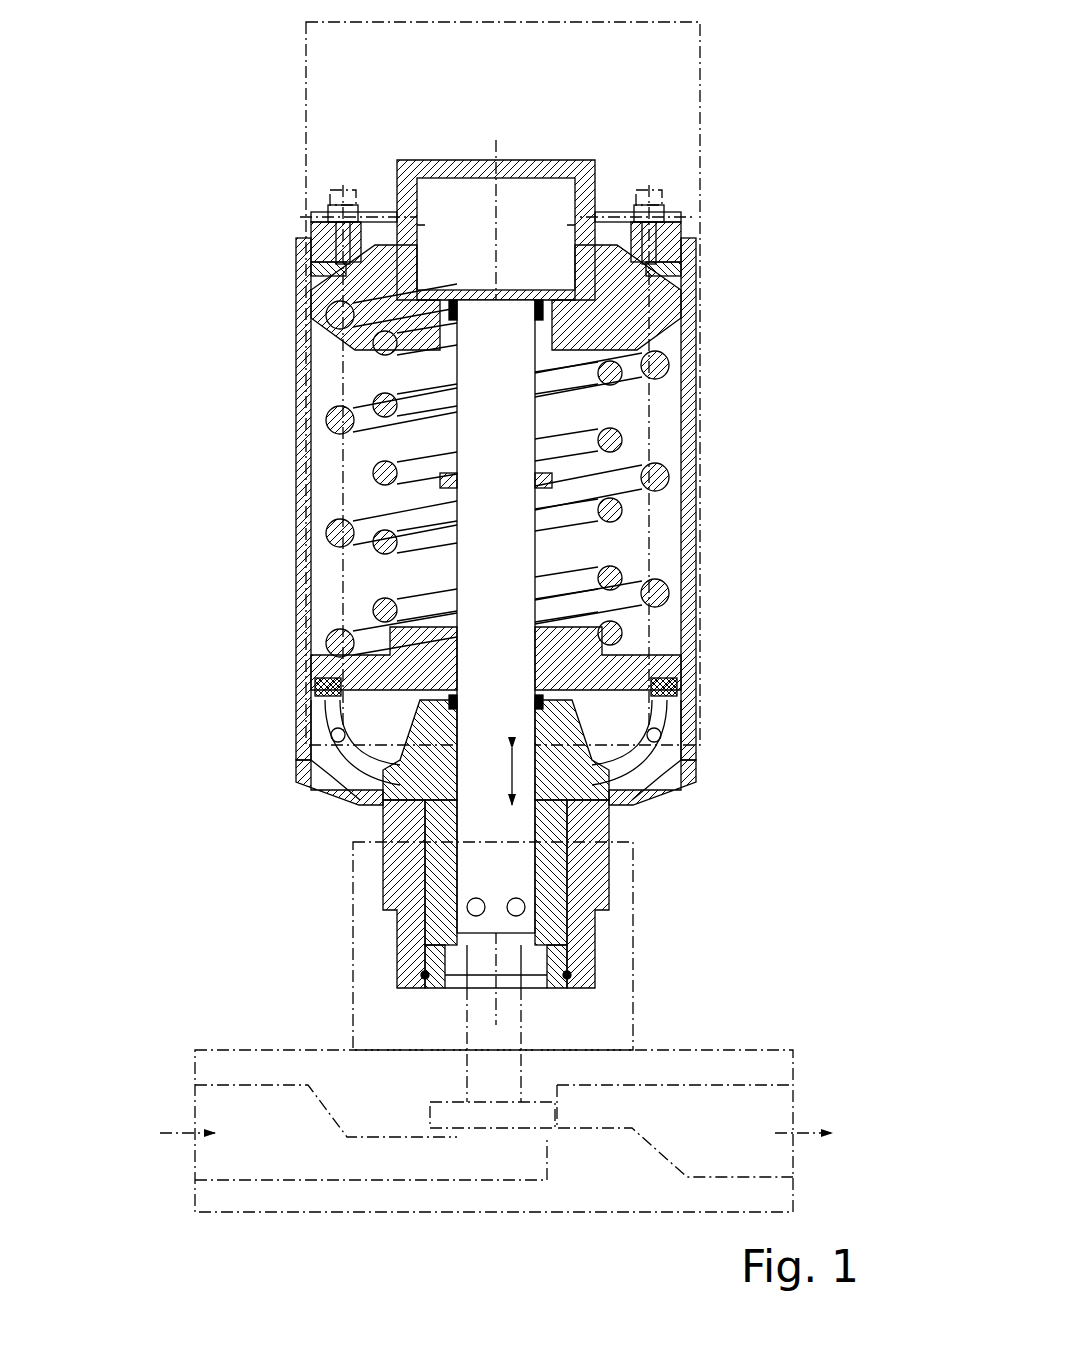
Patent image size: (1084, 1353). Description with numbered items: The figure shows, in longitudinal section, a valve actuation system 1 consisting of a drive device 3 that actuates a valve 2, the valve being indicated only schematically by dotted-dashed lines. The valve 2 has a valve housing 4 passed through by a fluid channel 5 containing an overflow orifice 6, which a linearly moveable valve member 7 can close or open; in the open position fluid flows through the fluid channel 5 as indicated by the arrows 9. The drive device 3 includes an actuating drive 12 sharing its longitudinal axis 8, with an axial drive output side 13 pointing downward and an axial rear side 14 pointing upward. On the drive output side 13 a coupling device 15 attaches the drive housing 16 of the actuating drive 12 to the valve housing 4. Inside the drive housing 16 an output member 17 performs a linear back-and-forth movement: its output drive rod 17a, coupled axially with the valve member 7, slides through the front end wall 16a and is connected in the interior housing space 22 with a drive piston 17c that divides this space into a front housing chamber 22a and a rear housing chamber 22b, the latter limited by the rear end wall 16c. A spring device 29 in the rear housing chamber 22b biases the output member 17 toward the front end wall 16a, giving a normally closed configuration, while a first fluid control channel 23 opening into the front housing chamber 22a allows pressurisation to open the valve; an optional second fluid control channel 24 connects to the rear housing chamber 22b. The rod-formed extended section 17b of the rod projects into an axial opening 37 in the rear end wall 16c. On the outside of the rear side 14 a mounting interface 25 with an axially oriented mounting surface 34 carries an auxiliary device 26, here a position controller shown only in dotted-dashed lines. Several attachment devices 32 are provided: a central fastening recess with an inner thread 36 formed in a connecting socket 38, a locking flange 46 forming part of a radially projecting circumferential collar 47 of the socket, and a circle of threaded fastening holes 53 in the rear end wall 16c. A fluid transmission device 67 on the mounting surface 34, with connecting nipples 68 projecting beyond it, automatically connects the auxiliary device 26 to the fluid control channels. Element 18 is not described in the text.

The valve actuation system 1 is at (832, 140).
The valve 2 is at (488, 1114).
The drive device 3 is at (720, 345).
The valve housing 4 is at (590, 1208).
The fluid channel 5 is at (390, 1185).
The overflow orifice 6 is at (515, 1133).
The valve member 7 is at (465, 1097).
The longitudinal axis 8 is at (500, 136).
The arrows 9 is at (170, 1125).
The actuating drive 12 is at (497, 554).
The axial drive output side 13 is at (648, 818).
The axial rear side 14 is at (496, 167).
The coupling device 15 is at (394, 893).
The drive housing 16 is at (298, 514).
The front end wall 16a is at (385, 778).
The rear end wall 16c is at (316, 292).
The output member 17 is at (493, 616).
The output drive rod 17a is at (520, 633).
The rod-formed extended section 17b is at (480, 400).
The drive piston 17c is at (342, 644).
The hub 18 is at (482, 751).
The interior housing space 22 is at (497, 470).
The front housing chamber 22a is at (337, 748).
The rear housing chamber 22b is at (662, 398).
The first fluid control channel 23 is at (340, 466).
The second fluid control channel 24 is at (690, 288).
The mounting interface 25 is at (626, 186).
The auxiliary device 26 is at (705, 45).
The spring device 29 is at (660, 586).
The attachment devices 32 is at (390, 166).
The mounting surface 34 is at (311, 222).
The inner thread 36 is at (578, 188).
The axial opening 37 is at (480, 346).
The connecting socket 38 is at (603, 208).
The locking flange 46 is at (392, 188).
The circumferential collar 47 is at (598, 165).
The threaded fastening holes 53 is at (419, 230).
The fluid transmission device 67 is at (328, 190).
The connecting nipple 68 is at (336, 186).